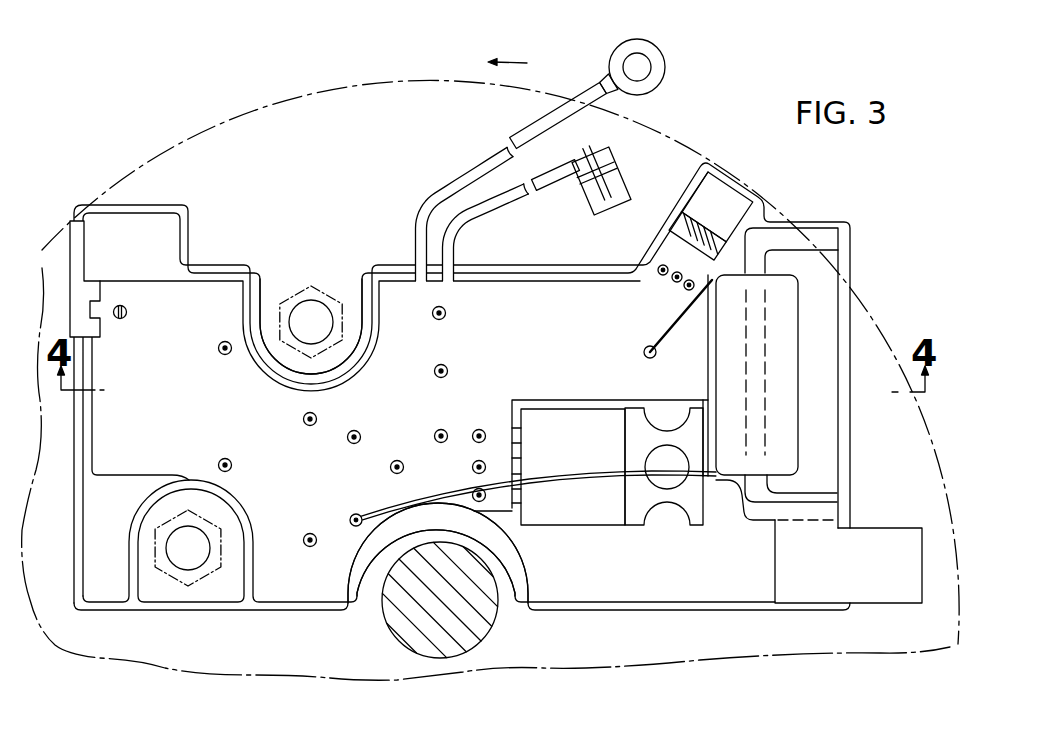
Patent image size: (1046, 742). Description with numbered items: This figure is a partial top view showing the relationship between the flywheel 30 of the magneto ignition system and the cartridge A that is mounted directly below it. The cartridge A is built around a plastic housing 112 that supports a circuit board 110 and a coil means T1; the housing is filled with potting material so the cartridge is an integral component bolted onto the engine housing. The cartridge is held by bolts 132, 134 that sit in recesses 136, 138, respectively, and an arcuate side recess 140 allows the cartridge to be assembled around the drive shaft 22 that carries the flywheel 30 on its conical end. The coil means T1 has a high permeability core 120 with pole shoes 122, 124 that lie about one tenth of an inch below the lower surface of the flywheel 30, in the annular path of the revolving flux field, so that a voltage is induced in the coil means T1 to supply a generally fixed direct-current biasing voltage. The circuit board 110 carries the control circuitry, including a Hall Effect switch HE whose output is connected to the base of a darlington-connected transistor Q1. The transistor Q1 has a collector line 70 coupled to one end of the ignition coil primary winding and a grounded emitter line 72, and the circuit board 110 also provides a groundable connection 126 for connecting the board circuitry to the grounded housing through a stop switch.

The flywheel 30 is at (404, 76).
The emitter line 72 is at (552, 127).
The collector line 70 is at (552, 183).
The cartridge A is at (553, 263).
The Hall Effect switch HE is at (752, 187).
The pole shoe 122 is at (827, 236).
The plastic housing 112 is at (240, 267).
The circuit board 110 is at (280, 583).
The groundable connection 126 is at (90, 288).
The recess 138 is at (352, 335).
The bolt 132 is at (325, 290).
The recess 136 is at (235, 556).
The bolt 134 is at (223, 533).
The arcuate side recess 140 is at (508, 583).
The drive shaft 22 is at (450, 653).
The coil means T1 is at (796, 428).
The transistor Q1 is at (567, 527).
The core 120 is at (775, 494).
The pole shoe 124 is at (877, 533).